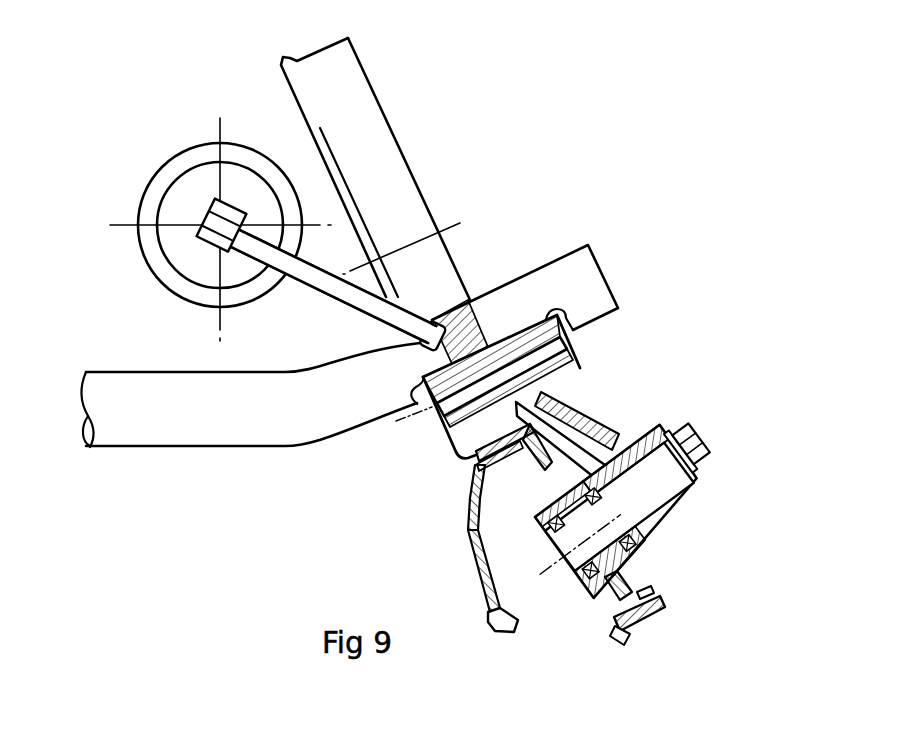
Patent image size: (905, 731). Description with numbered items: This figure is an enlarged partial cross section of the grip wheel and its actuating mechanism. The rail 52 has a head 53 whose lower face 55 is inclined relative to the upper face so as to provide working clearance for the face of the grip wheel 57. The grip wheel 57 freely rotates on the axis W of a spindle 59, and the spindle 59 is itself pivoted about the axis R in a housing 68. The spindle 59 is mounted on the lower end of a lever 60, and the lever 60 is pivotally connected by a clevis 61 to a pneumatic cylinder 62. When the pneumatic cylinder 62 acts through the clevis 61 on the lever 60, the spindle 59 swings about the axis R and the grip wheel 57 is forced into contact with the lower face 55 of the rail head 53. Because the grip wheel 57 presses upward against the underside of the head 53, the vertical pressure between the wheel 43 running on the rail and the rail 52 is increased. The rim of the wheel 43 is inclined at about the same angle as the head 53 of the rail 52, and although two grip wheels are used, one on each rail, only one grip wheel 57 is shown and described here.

The wheel 43 is at (365, 70).
The pneumatic cylinder 62 is at (197, 173).
The clevis 61 is at (205, 230).
The lever 60 is at (345, 307).
The axis R is at (584, 338).
The housing 68 is at (573, 378).
The lower face 55 is at (585, 430).
The head 53 is at (467, 473).
The rail 52 is at (470, 543).
The spindle 59 is at (662, 489).
The axis W is at (700, 437).
The grip wheel 57 is at (664, 610).